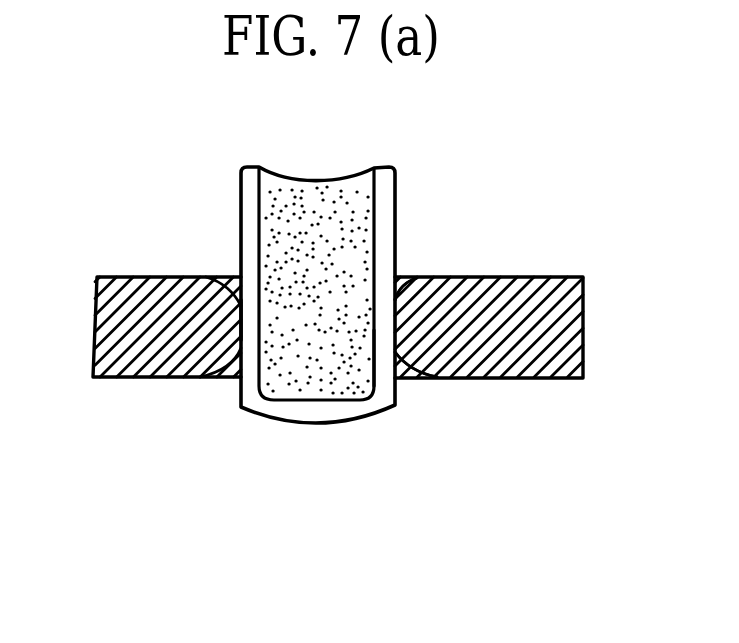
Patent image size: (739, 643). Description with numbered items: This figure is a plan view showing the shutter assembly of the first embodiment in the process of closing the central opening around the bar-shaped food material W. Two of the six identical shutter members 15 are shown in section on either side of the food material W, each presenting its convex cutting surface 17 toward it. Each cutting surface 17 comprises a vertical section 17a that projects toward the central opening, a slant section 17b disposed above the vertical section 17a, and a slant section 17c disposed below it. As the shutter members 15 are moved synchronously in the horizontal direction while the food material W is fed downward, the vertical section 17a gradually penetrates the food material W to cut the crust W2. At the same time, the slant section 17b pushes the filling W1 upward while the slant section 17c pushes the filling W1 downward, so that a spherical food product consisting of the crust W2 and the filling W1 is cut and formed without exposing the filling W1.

The shutter member 15 is at (127, 272).
The cutting surface 17 is at (223, 275).
The vertical section 17a is at (383, 330).
The slant section 17b is at (406, 282).
The slant section 17c is at (405, 378).
The food material W is at (233, 182).
The filling W1 is at (343, 197).
The crust W2 is at (240, 231).